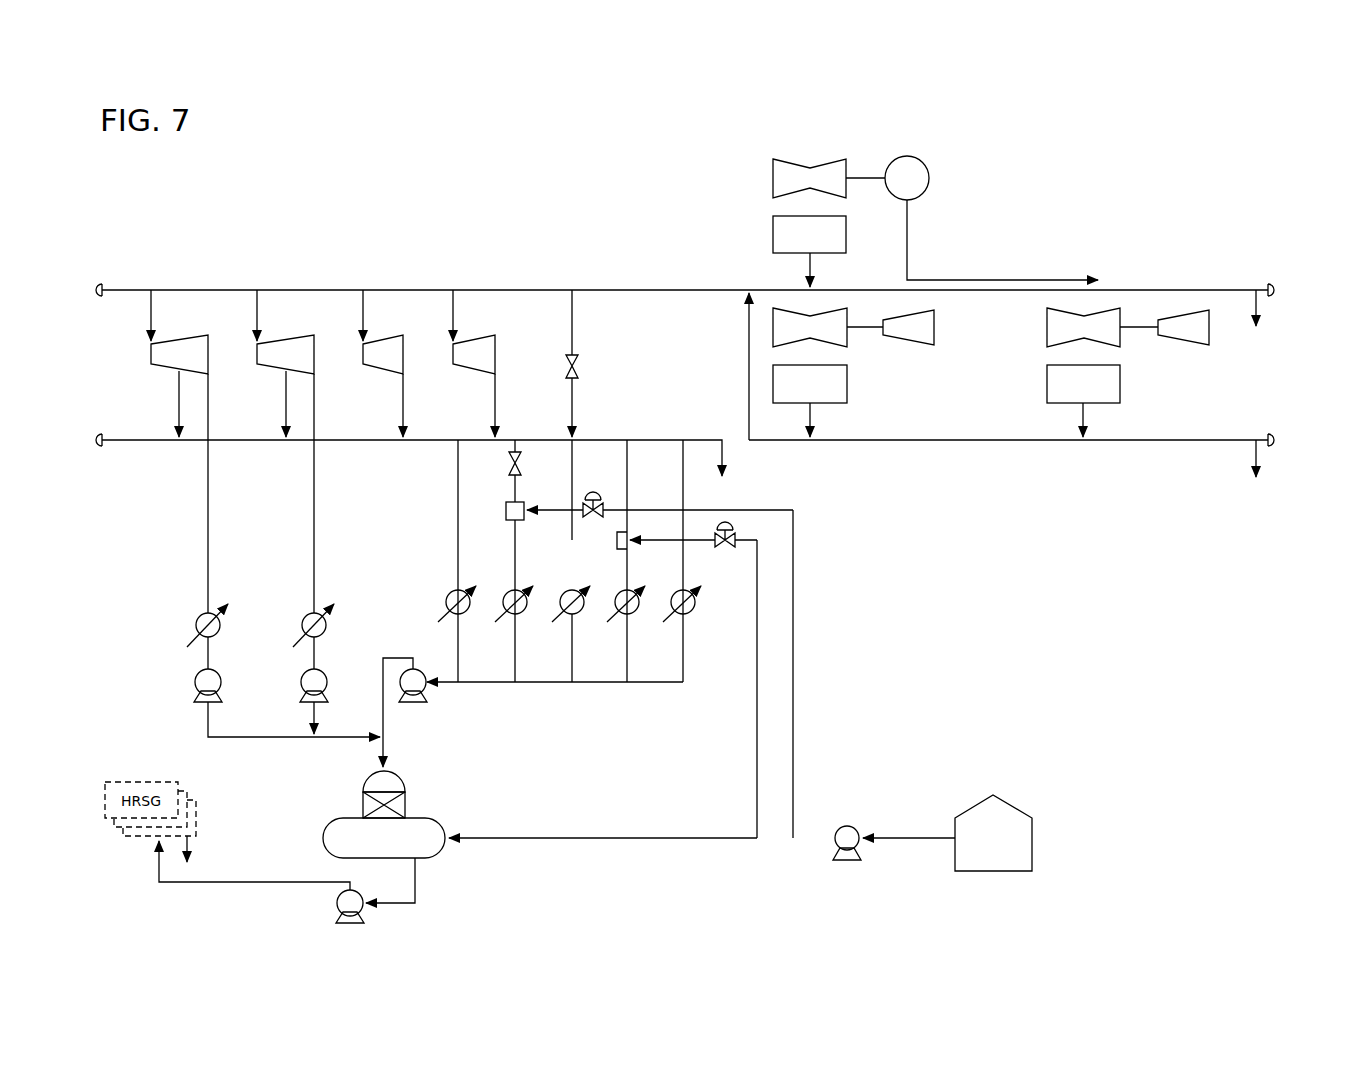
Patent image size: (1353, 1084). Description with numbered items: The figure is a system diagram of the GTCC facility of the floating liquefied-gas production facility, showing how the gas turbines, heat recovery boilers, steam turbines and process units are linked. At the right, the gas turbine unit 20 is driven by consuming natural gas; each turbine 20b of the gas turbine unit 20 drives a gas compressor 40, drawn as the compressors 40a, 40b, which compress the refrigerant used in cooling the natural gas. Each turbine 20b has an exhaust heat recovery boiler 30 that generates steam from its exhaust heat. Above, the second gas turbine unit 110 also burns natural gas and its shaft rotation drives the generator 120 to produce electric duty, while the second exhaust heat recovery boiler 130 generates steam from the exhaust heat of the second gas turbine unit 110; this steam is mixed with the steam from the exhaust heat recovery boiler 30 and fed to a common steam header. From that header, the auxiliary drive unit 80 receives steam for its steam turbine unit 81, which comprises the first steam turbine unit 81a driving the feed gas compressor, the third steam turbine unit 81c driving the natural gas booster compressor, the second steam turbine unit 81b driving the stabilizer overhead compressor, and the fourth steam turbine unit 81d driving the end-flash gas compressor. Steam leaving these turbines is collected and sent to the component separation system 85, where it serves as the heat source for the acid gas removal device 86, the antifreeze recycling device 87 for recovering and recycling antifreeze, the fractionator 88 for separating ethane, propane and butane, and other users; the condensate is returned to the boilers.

The auxiliary drive unit 80 is at (172, 256).
The steam turbine unit 81 is at (205, 224).
The first steam turbine unit 81a is at (200, 342).
The second steam turbine unit 81b is at (365, 353).
The third steam turbine unit 81c is at (310, 348).
The fourth steam turbine unit 81d is at (457, 355).
The component separation system 85 is at (614, 726).
The acid gas removal device 86 is at (520, 616).
The antifreeze recycling device 87 is at (452, 614).
The fractionator 88 is at (616, 605).
The second gas turbine unit 110 is at (772, 177).
The generator 120 is at (906, 157).
The second exhaust heat recovery boiler 130 is at (772, 233).
The gas turbine unit 20 is at (1022, 467).
The turbine 20b is at (858, 343).
The exhaust heat recovery boiler 30 is at (847, 397).
The gas compressor 40 is at (1088, 336).
The gas compressor 40a is at (1210, 334).
The gas compressor 40b is at (935, 330).